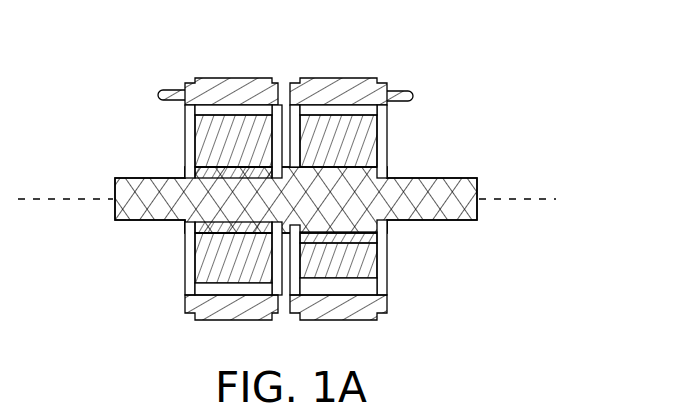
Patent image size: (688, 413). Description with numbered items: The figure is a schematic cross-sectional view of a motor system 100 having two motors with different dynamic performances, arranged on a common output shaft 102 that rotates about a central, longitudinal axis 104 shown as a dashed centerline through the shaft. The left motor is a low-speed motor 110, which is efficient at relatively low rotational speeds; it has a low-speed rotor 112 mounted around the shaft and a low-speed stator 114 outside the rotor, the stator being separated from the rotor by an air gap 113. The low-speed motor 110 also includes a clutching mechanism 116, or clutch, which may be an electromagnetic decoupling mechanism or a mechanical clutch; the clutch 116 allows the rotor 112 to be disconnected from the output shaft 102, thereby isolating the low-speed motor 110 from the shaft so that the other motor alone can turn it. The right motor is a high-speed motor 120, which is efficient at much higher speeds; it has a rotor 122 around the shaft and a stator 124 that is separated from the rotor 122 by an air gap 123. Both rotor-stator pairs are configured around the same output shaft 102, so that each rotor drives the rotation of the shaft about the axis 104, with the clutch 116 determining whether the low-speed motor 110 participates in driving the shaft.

The system 100 is at (78, 26).
The output shaft 102 is at (115, 186).
The central longitudinal axis 104 is at (537, 199).
The low-speed motor 110 is at (235, 62).
The low-speed rotor 112 is at (207, 152).
The air gap 113 is at (207, 110).
The low-speed stator 114 is at (187, 310).
The clutching mechanism 116 is at (185, 227).
The high-speed motor 120 is at (348, 62).
The rotor 122 is at (365, 137).
The air gap 123 is at (368, 287).
The stator 124 is at (387, 307).